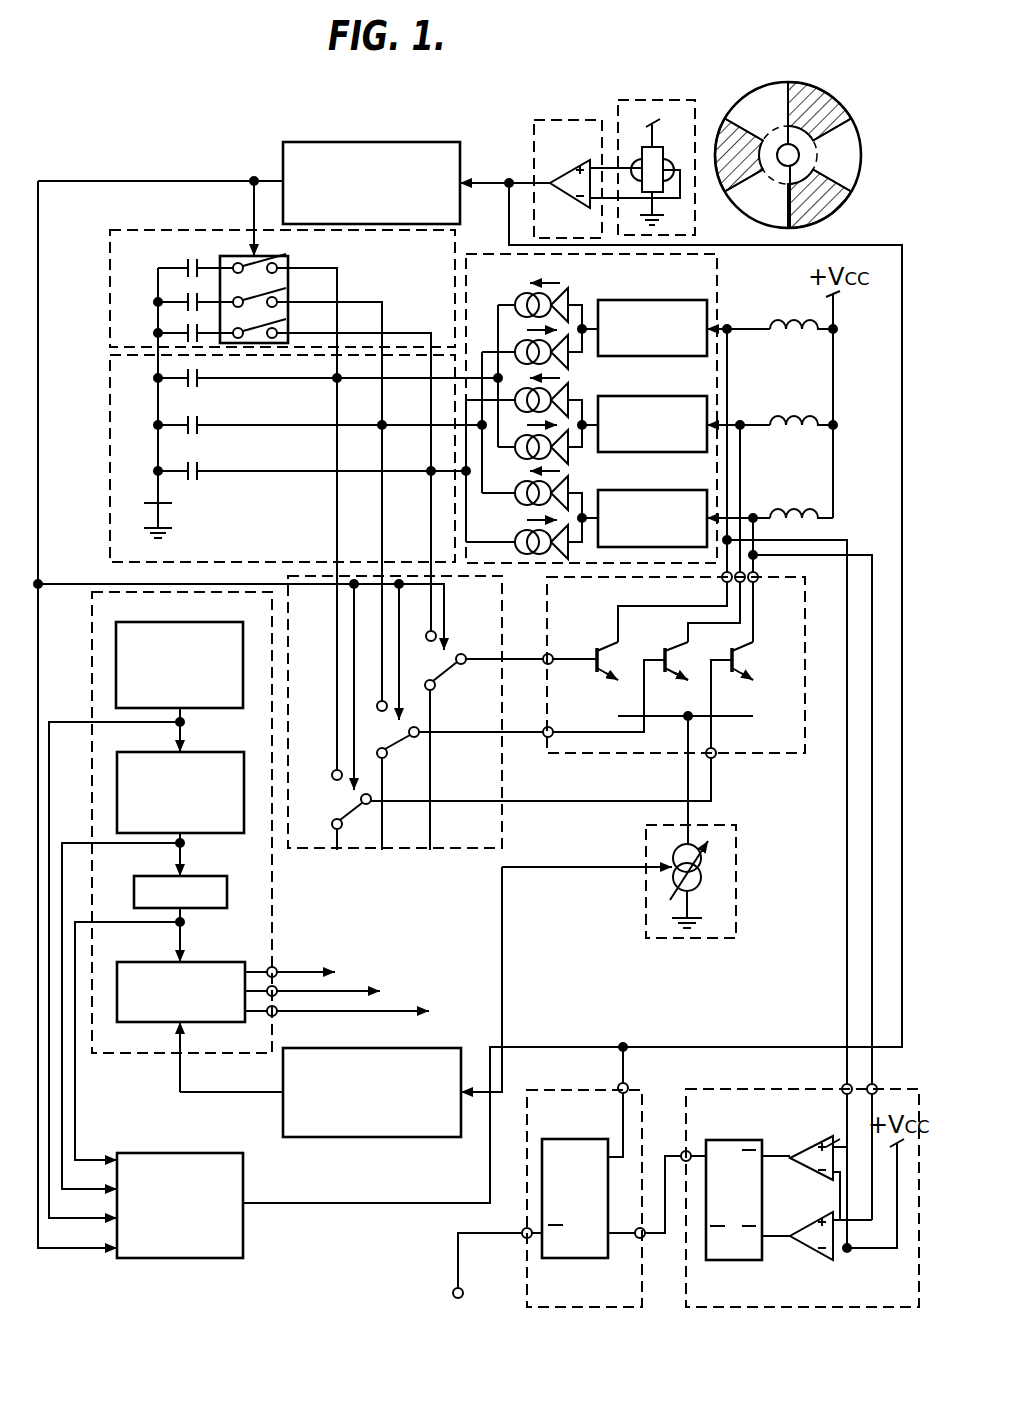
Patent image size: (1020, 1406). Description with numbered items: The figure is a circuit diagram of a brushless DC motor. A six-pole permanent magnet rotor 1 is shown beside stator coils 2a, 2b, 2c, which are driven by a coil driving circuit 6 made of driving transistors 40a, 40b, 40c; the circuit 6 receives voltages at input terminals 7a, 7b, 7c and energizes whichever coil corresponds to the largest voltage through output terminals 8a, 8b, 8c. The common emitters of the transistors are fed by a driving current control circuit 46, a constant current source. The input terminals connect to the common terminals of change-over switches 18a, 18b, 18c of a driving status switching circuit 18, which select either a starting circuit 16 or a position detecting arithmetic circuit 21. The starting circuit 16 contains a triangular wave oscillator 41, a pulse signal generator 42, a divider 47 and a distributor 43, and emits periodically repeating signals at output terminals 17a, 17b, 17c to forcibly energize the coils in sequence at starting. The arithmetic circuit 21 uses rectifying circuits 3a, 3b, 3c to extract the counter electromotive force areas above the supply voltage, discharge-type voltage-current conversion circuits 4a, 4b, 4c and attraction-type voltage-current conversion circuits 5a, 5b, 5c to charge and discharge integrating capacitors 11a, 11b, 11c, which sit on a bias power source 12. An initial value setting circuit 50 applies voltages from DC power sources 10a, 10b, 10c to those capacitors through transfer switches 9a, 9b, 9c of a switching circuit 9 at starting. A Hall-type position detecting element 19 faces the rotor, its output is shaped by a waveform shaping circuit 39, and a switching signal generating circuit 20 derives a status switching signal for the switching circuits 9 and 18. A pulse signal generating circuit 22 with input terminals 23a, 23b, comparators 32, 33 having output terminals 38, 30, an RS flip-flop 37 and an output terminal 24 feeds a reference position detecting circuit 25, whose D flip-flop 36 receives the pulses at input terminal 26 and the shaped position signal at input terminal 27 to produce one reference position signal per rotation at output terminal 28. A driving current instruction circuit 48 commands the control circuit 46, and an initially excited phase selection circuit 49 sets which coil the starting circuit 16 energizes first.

The permanent magnet rotor 1 is at (854, 186).
The stator coil 2a is at (792, 320).
The stator coil 2b is at (793, 412).
The stator coil 2c is at (810, 508).
The rectifying circuit 3a is at (660, 300).
The rectifying circuit 3b is at (692, 396).
The rectifying circuit 3c is at (692, 490).
The discharge-type voltage-current conversion circuit 4a is at (570, 302).
The discharge-type voltage-current conversion circuit 4b is at (570, 402).
The discharge-type voltage-current conversion circuit 4c is at (567, 497).
The attraction-type voltage-current conversion circuit 5a is at (578, 356).
The attraction-type voltage-current conversion circuit 5b is at (578, 450).
The attraction-type voltage-current conversion circuit 5c is at (552, 532).
The coil driving circuit 6 is at (598, 755).
The input terminal 7a is at (546, 654).
The input terminal 7b is at (546, 727).
The input terminal 7c is at (716, 757).
The output terminal 8a is at (722, 580).
The output terminal 8b is at (745, 585).
The output terminal 8c is at (757, 580).
The switching circuit 9 is at (258, 254).
The transfer switch 9a is at (285, 263).
The transfer switch 9b is at (288, 298).
The transfer switch 9c is at (288, 327).
The DC power source 10a is at (186, 262).
The DC power source 10b is at (185, 297).
The DC power source 10c is at (185, 328).
The integrating capacitor 11a is at (200, 472).
The integrating capacitor 11b is at (200, 426).
The integrating capacitor 11c is at (200, 380).
The bias power source 12 is at (172, 508).
The starting circuit 16 is at (92, 648).
The output terminal 17a is at (278, 1014).
The output terminal 17b is at (278, 987).
The output terminal 17c is at (275, 967).
The driving status switching circuit 18 is at (503, 815).
The change-over switch 18a is at (448, 672).
The change-over switch 18b is at (397, 745).
The change-over switch 18c is at (348, 810).
The position detecting element 19 is at (658, 100).
The switching signal generating circuit 20 is at (392, 142).
The position detecting arithmetic circuit 21 is at (718, 278).
The pulse signal generating circuit 22 is at (748, 1308).
The input terminal 23a is at (845, 1087).
The input terminal 23b is at (875, 1086).
The output terminal 24 is at (681, 1153).
The reference position detecting circuit 25 is at (572, 1308).
The input terminal 26 is at (642, 1238).
The input terminal 27 is at (628, 1086).
The output terminal 28 is at (525, 1228).
The output terminal 30 is at (780, 1240).
The comparator 32 is at (812, 1140).
The comparator 33 is at (806, 1250).
The D flip-flop 36 is at (568, 1139).
The RS flip-flop 37 is at (733, 1140).
The output terminal 38 is at (790, 1155).
The waveform shaping circuit 39 is at (565, 120).
The driving transistor 40a is at (607, 648).
The driving transistor 40b is at (680, 650).
The driving transistor 40c is at (745, 665).
The triangular wave oscillator 41 is at (222, 622).
The pulse signal generator 42 is at (208, 752).
The distributor 43 is at (207, 962).
The driving current control circuit 46 is at (646, 828).
The divider 47 is at (143, 876).
The driving current instruction circuit 48 is at (167, 1153).
The initially excited phase selection circuit 49 is at (368, 1137).
The initial value setting circuit 50 is at (193, 228).